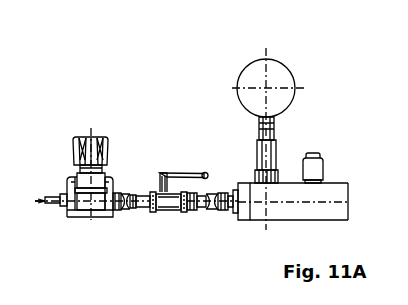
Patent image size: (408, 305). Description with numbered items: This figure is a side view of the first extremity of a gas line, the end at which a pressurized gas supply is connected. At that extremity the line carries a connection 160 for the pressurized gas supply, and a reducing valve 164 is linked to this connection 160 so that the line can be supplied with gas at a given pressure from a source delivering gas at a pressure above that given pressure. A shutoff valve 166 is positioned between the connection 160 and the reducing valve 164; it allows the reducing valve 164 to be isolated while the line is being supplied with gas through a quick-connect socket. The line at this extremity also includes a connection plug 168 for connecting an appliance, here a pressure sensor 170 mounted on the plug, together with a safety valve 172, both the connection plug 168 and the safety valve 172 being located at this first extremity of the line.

The connection 160 is at (229, 212).
The reducing valve 164 is at (103, 136).
The shutoff valve 166 is at (173, 213).
The connection plug 168 is at (275, 167).
The pressure sensor 170 is at (290, 71).
The safety valve 172 is at (323, 160).